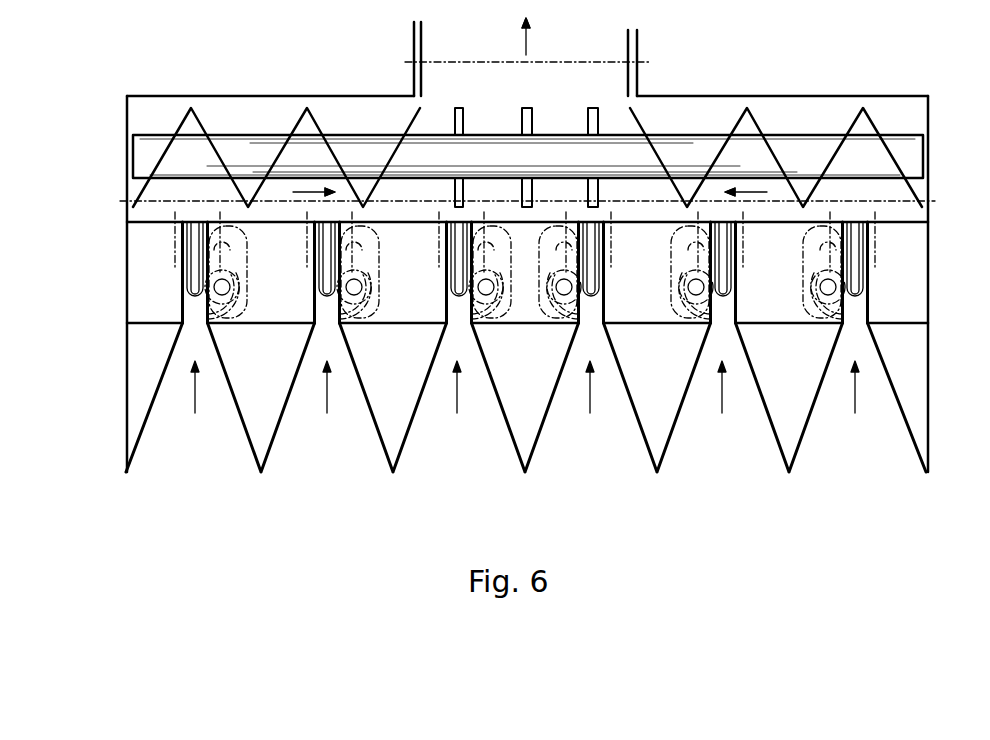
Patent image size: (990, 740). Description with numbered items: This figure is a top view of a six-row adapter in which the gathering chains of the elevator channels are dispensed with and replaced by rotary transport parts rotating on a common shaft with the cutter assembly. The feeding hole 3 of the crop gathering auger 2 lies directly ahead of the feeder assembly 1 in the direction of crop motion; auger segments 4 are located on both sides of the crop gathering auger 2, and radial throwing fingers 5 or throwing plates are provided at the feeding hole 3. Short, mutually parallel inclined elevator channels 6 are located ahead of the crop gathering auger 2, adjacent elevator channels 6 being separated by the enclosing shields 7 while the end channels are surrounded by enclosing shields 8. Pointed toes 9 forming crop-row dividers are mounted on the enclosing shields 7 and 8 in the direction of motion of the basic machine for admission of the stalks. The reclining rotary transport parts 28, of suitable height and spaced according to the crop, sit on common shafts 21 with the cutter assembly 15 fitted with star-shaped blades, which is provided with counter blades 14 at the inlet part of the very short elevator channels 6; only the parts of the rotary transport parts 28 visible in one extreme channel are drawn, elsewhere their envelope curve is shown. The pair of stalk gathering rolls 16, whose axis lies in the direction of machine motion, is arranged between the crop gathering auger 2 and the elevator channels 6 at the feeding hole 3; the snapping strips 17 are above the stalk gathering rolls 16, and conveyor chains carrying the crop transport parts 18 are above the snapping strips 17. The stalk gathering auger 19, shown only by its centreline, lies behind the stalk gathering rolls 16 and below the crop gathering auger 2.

The feeder assembly 1 is at (620, 78).
The crop gathering auger 2 is at (913, 150).
The feeding hole 3 is at (566, 113).
The auger segments 4 is at (200, 120).
The radial throwing fingers 5 is at (464, 118).
The elevator channel 6 is at (318, 277).
The enclosing shield 7 is at (280, 310).
The enclosing shield 8 is at (130, 283).
The pointed toe 9 is at (257, 440).
The counter blade 14 is at (458, 323).
The cutter assembly 15 is at (328, 323).
The pair of stalk gathering rolls 16 is at (178, 222).
The snapping strips 17 is at (180, 233).
The crop transport parts 18 is at (817, 307).
The stalk gathering auger 19 is at (935, 198).
The common shaft 21 is at (213, 288).
The rotary transport part 28 is at (867, 305).